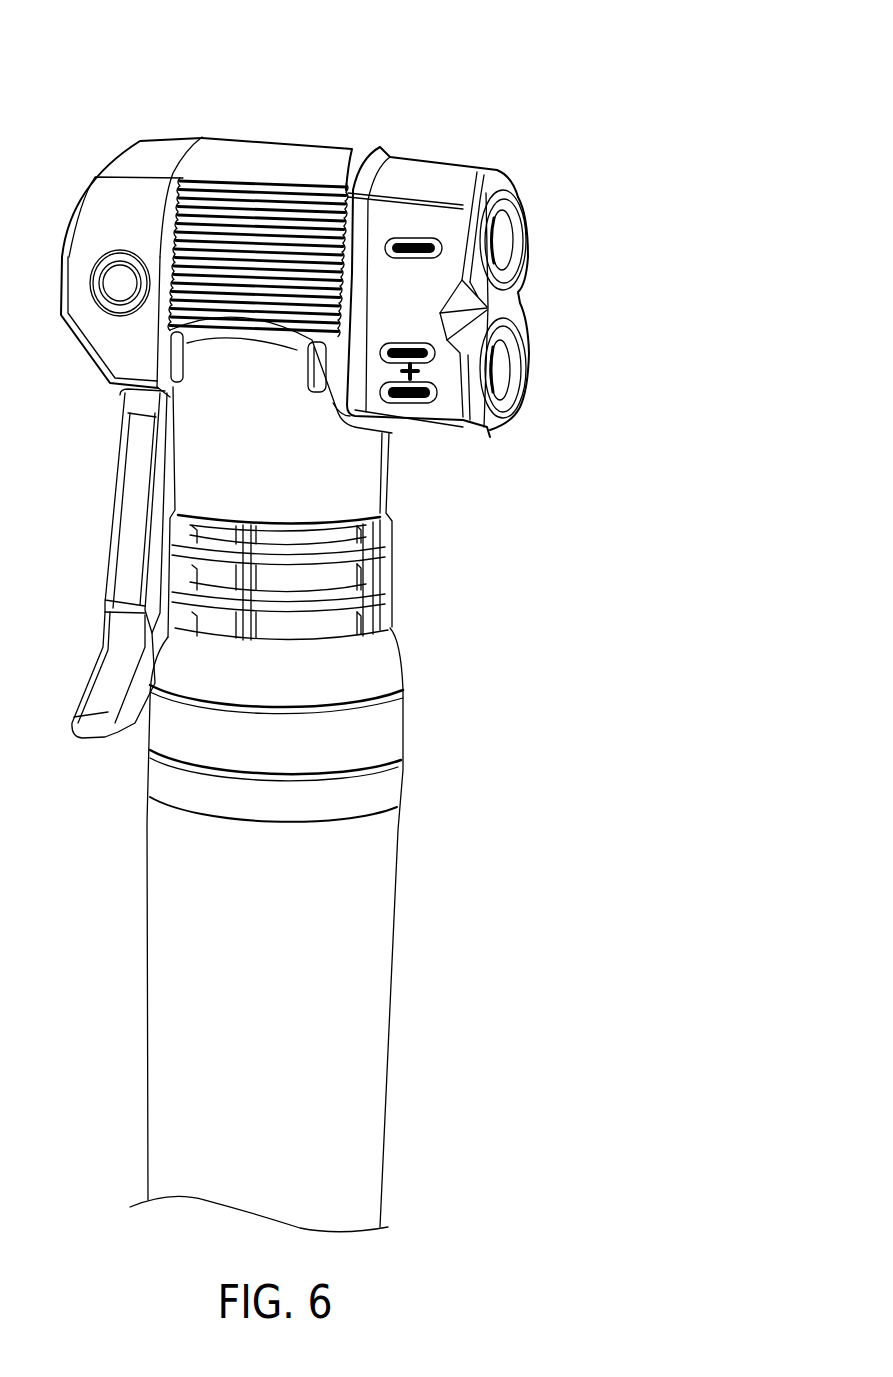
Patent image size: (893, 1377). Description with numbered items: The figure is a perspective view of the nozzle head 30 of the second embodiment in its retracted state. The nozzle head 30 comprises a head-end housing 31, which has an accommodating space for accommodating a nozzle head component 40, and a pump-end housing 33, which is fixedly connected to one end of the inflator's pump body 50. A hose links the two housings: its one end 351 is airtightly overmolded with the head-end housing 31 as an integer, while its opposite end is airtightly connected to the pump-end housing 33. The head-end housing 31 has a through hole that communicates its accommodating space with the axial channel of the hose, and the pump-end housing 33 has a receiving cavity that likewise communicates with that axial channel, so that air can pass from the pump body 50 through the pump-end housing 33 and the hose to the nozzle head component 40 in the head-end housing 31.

The nozzle head 30 is at (180, 82).
The end of hose 351 is at (282, 158).
The head-end housing 31 is at (426, 176).
The nozzle head component 40 is at (495, 252).
The pump-end housing 33 is at (338, 472).
The pump body 50 is at (328, 885).